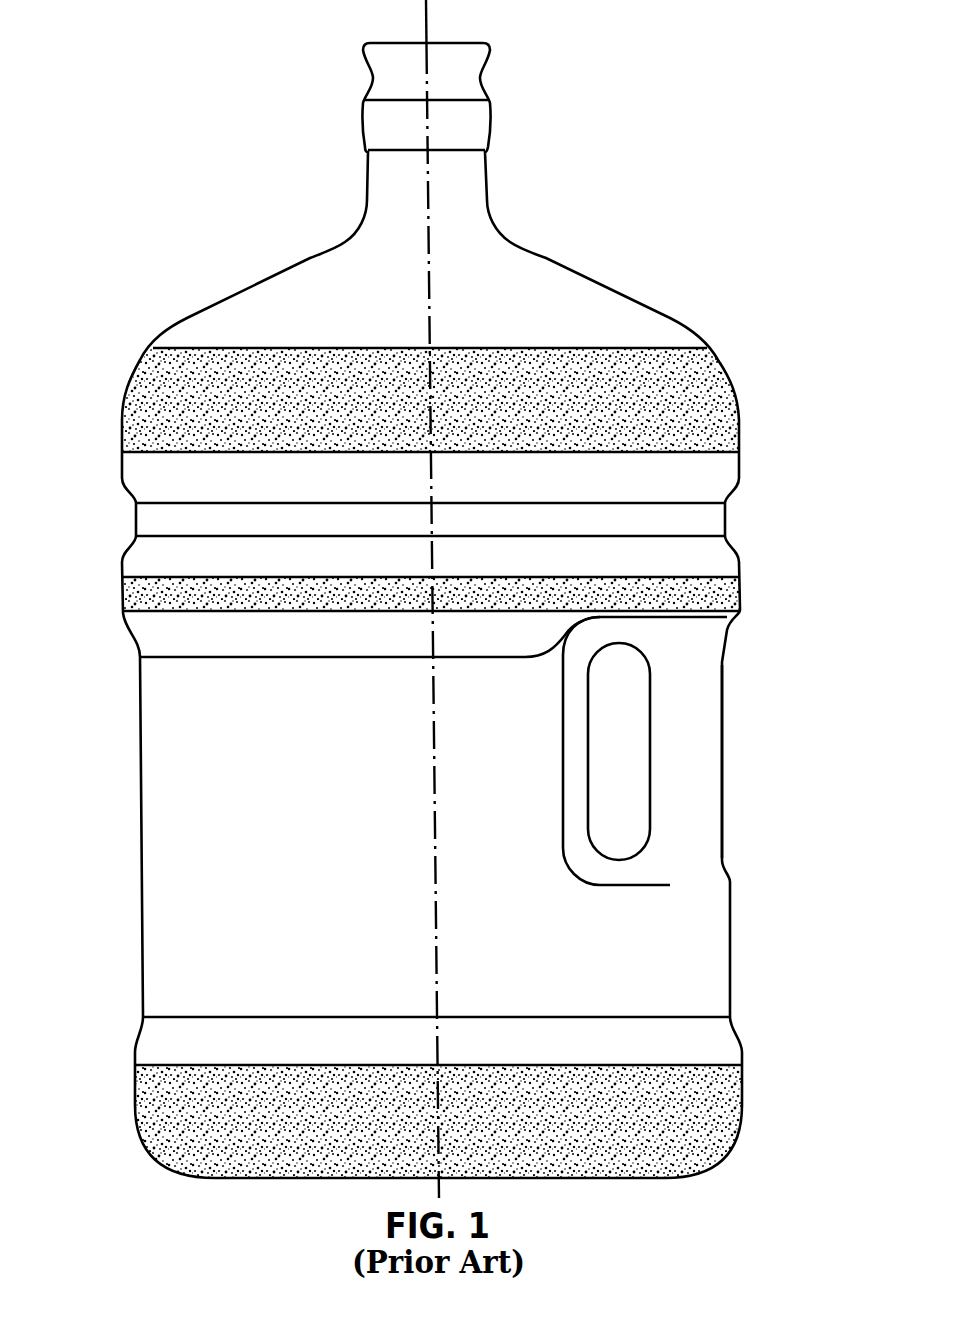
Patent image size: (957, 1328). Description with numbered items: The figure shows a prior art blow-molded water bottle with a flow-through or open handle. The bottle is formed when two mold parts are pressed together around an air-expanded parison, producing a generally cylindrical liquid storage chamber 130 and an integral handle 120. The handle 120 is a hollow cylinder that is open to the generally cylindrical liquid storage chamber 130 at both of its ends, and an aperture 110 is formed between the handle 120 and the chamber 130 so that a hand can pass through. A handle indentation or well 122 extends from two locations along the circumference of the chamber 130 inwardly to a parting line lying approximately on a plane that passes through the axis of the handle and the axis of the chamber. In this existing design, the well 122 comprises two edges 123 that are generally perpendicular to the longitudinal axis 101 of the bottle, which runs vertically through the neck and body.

The longitudinal axis 101 is at (426, 13).
The aperture 110 is at (633, 738).
The handle 120 is at (708, 797).
The handle indentation or well 122 is at (756, 838).
The edges 123 is at (672, 618).
The generally cylindrical liquid storage chamber 130 is at (173, 830).